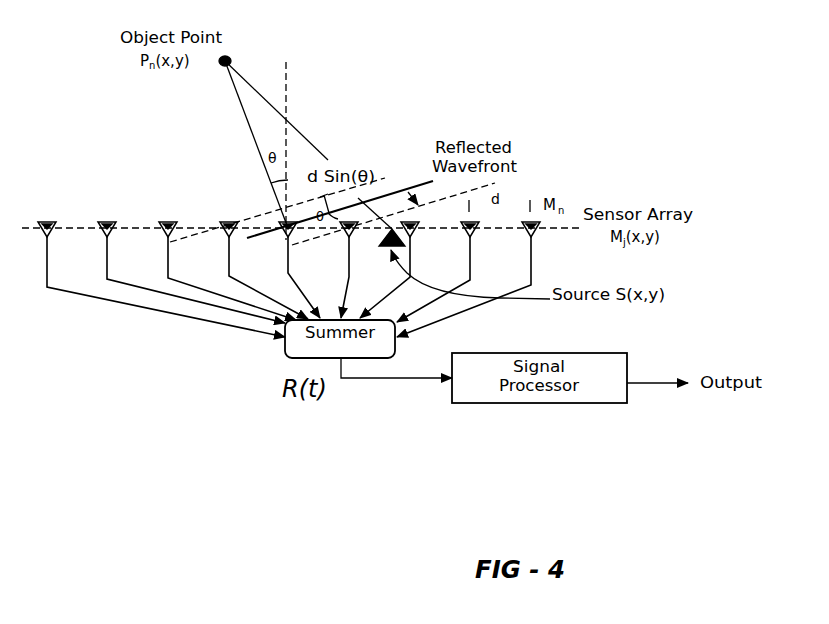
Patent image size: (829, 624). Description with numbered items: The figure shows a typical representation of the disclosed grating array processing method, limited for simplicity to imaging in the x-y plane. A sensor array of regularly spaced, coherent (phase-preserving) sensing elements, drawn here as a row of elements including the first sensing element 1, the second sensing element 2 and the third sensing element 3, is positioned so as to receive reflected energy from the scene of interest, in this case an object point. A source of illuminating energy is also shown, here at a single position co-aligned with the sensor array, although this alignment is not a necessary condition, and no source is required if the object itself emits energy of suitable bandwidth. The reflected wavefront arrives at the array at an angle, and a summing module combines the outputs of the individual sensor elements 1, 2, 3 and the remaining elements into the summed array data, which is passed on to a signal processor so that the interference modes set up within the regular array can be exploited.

The sensor M1 1 is at (160, 266).
The sensor M2 2 is at (190, 259).
The sensor M3 3 is at (227, 271).